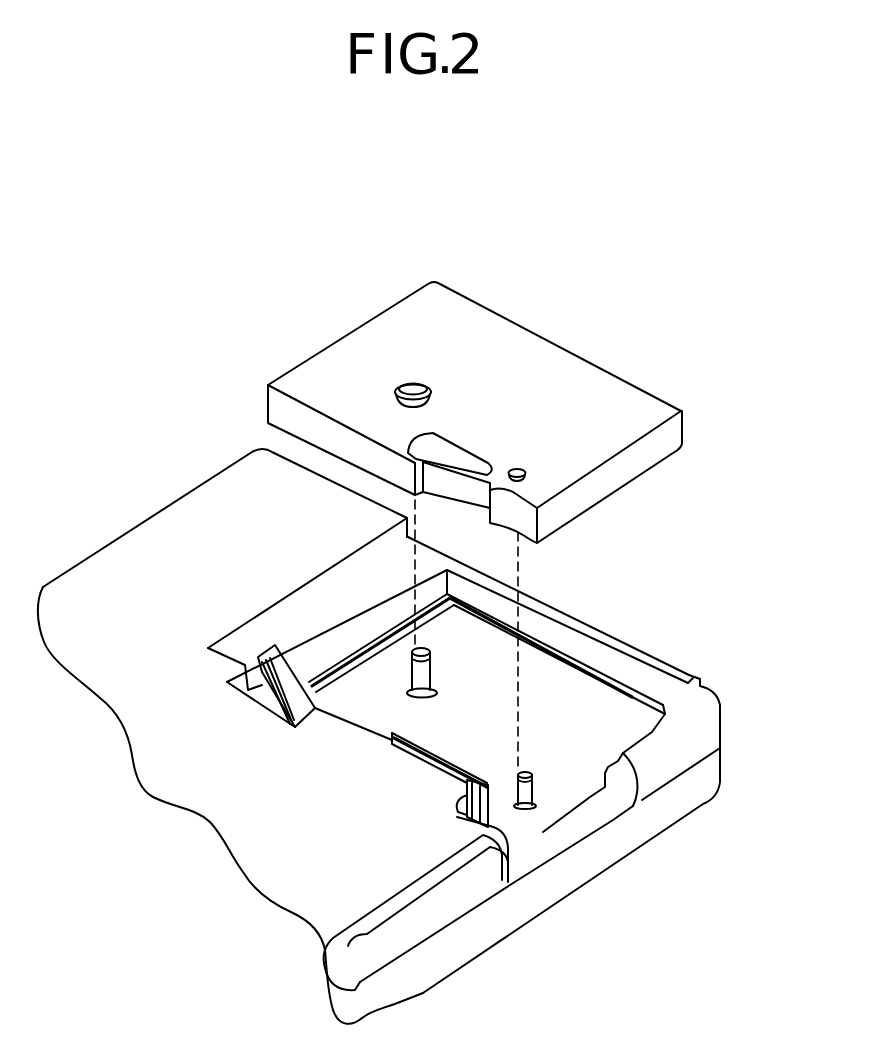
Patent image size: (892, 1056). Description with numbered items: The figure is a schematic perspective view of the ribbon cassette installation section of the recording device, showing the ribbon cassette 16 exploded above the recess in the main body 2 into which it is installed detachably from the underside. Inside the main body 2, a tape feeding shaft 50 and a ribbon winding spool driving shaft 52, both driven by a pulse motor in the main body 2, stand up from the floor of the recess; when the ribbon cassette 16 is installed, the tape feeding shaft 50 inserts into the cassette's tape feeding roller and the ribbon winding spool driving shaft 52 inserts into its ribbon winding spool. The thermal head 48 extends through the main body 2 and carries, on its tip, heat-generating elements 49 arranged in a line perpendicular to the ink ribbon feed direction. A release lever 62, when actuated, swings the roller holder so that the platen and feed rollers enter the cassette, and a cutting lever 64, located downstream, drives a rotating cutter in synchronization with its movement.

The main body 2 is at (708, 660).
The ribbon cassette 16 is at (457, 308).
The thermal head 48 is at (435, 765).
The heat-generating elements 49 is at (457, 817).
The tape feeding shaft 50 is at (530, 785).
The ribbon winding spool driving shaft 52 is at (430, 672).
The release lever 62 is at (283, 673).
The cutting lever 64 is at (367, 955).